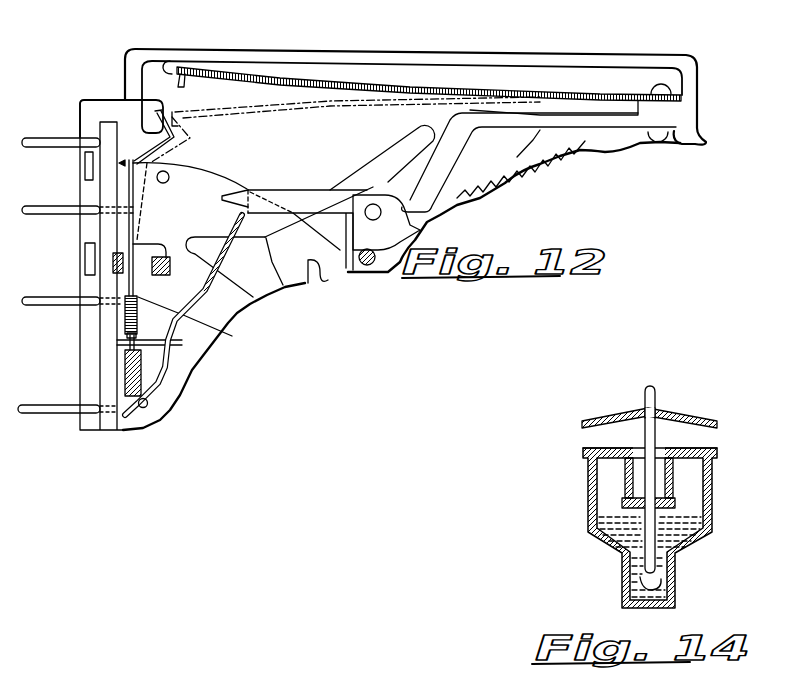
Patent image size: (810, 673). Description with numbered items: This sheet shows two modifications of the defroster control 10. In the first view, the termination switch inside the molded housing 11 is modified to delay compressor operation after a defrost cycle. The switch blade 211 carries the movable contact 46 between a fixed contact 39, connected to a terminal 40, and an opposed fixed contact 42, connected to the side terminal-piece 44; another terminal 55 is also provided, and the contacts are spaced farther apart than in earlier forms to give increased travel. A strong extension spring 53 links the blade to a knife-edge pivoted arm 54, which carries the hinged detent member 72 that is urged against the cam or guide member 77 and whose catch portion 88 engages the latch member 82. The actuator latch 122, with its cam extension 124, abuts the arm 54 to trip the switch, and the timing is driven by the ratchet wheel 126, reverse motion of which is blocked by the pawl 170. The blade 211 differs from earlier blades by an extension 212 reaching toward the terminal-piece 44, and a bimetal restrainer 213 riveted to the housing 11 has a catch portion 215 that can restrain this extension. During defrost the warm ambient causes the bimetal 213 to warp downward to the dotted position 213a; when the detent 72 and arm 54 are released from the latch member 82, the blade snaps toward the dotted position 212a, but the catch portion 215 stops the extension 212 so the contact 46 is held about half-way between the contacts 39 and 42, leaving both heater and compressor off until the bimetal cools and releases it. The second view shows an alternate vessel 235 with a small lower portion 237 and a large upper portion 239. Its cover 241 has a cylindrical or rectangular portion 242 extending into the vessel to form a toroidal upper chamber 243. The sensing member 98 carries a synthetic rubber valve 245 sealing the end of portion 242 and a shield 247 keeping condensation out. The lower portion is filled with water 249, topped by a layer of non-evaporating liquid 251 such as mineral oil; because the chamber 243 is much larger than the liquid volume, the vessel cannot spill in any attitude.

In FIG. 12, the defroster control 10 is at (123, 48).
In FIG. 12, the housing 11 is at (688, 108).
In FIG. 12, the bimetal restrainer 213 is at (368, 88).
In FIG. 12, the catch portion 215 is at (196, 26).
In FIG. 12, the extension 212 is at (166, 113).
In FIG. 12, the released position of blade extension 212a is at (190, 124).
In FIG. 12, the warm position of bimetal 213a is at (311, 146).
In FIG. 12, the terminal 55 is at (40, 138).
In FIG. 12, the switch blade 211 is at (132, 200).
In FIG. 12, the terminal 44 is at (48, 210).
In FIG. 12, the fixed contact 39 is at (120, 248).
In FIG. 12, the movable contact 46 is at (126, 297).
In FIG. 12, the fixed contact 42 is at (153, 272).
In FIG. 12, the terminal 40 is at (58, 302).
In FIG. 12, the extension spring 53 is at (128, 376).
In FIG. 12, the arm 54 is at (237, 212).
In FIG. 12, the cam extension 124 is at (234, 193).
In FIG. 12, the actuator latch 122 is at (292, 193).
In FIG. 12, the detent member 72 is at (405, 152).
In FIG. 12, the cam or guide member 77 is at (444, 156).
In FIG. 12, the ratchet wheel 126 is at (540, 165).
In FIG. 12, the pawl 170 is at (590, 142).
In FIG. 12, the catch portion 88 is at (342, 270).
In FIG. 12, the latch member 82 is at (319, 276).
In FIG. 14, the vessel 235 is at (603, 544).
In FIG. 14, the cover 241 is at (610, 450).
In FIG. 14, the upper portion 239 is at (598, 483).
In FIG. 14, the synthetic rubber valve 245 is at (626, 502).
In FIG. 14, the cylindrical or rectangular portion 242 is at (688, 478).
In FIG. 14, the upper chamber 243 is at (688, 495).
In FIG. 14, the non-evaporating liquid 251 is at (690, 533).
In FIG. 14, the sensing member 98 is at (654, 401).
In FIG. 14, the shield 247 is at (630, 412).
In FIG. 14, the water 249 is at (665, 589).
In FIG. 14, the lower portion 237 is at (628, 576).